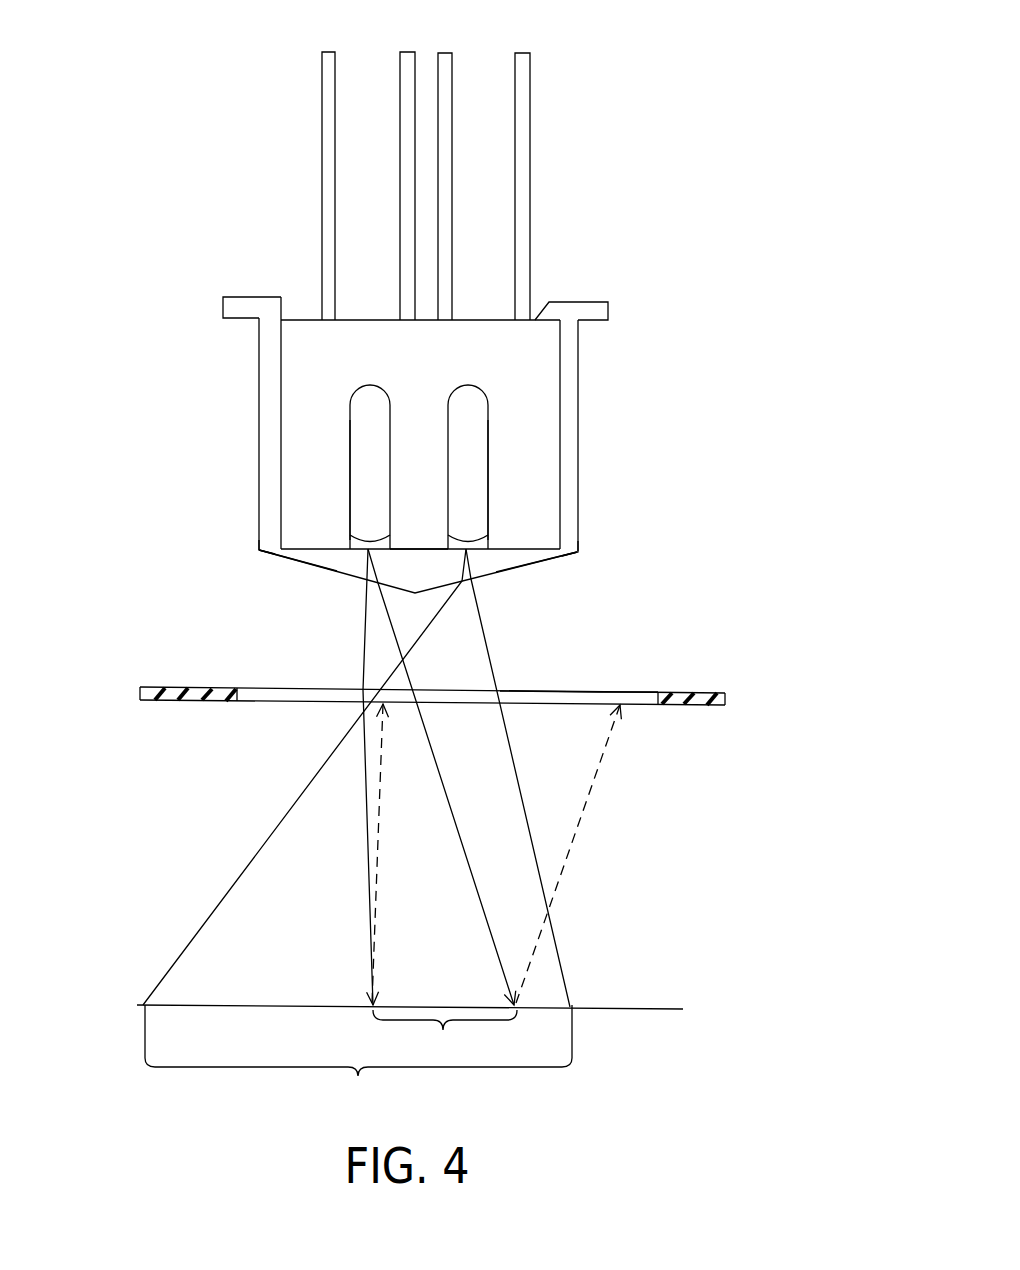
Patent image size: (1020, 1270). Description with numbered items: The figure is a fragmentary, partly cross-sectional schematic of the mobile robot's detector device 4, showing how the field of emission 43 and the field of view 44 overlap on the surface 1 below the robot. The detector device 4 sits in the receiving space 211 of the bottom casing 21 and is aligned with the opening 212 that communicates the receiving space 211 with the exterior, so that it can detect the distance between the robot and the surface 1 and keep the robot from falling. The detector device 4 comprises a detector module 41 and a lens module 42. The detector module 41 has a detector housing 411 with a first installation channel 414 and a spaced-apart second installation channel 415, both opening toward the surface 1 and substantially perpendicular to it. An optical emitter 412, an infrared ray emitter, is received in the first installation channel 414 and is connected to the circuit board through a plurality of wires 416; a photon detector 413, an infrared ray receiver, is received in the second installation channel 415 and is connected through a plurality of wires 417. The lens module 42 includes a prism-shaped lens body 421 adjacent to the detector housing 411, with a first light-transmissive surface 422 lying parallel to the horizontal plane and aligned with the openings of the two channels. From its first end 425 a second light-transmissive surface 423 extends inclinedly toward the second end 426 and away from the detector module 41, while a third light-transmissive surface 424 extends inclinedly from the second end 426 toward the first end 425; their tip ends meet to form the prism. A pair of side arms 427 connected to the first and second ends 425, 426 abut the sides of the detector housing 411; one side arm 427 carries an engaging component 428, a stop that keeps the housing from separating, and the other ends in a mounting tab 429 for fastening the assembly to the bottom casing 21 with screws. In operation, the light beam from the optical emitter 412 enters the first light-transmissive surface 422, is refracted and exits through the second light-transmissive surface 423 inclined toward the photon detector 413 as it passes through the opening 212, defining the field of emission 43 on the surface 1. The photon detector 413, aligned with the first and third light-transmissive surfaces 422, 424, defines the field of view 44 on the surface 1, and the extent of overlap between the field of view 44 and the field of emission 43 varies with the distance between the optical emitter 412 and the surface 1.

The detector device 4 is at (267, 260).
The detector module 41 is at (537, 295).
The detector housing 411 is at (535, 360).
The optical emitter 412 is at (365, 423).
The photon detector 413 is at (470, 413).
The first installation channel 414 is at (348, 455).
The second installation channel 415 is at (488, 448).
The wires 416 is at (328, 73).
The wires 417 is at (447, 75).
The lens module 42 is at (237, 491).
The lens body 421 is at (345, 583).
The first light-transmissive surface 422 is at (503, 550).
The second light-transmissive surface 423 is at (310, 565).
The third light-transmissive surface 424 is at (525, 567).
The first end 425 is at (259, 549).
The second end 426 is at (577, 552).
The side arms 427 is at (268, 418).
The engaging component 428 is at (553, 312).
The mounting tab 429 is at (238, 307).
The bottom casing 21 is at (677, 707).
The receiving space 211 is at (668, 613).
The opening 212 is at (662, 692).
The surface 1 is at (645, 1009).
The field of emission 43 is at (445, 1036).
The field of view 44 is at (358, 1057).